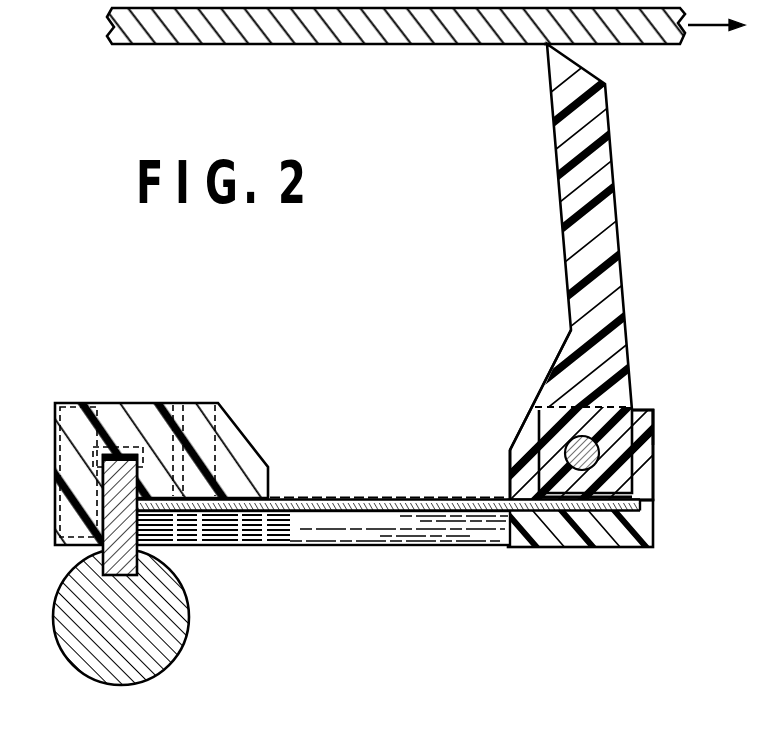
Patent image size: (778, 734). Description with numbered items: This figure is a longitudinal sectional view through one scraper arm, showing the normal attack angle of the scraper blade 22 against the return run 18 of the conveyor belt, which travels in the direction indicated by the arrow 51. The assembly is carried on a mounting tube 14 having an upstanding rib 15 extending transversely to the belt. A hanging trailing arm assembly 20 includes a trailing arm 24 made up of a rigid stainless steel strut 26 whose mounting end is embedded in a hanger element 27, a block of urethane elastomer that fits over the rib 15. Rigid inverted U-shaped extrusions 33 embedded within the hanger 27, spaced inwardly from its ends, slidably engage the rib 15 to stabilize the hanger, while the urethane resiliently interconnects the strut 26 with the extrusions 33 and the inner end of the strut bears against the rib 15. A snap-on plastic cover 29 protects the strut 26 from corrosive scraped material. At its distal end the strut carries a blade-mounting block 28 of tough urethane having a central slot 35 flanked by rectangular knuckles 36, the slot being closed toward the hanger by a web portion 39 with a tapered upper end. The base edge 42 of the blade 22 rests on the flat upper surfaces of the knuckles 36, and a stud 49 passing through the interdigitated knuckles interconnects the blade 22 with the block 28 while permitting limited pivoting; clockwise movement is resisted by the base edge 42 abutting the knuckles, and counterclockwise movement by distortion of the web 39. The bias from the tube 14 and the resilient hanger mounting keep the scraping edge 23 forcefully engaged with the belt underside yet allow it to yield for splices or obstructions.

The mounting tube 14 is at (173, 618).
The upstanding rib 15 is at (100, 549).
The return run of conveyor belt 18 is at (146, 28).
The trailing arm assembly 20 is at (378, 491).
The scraper blade 22 is at (605, 233).
The scraping edge 23 is at (545, 46).
The trailing arm 24 is at (427, 527).
The rigid strut 26 is at (203, 527).
The hanger element 27 is at (233, 428).
The blade-mounting block 28 is at (648, 516).
The snap-on plastic cover 29 is at (285, 496).
The inverted U-shaped extrusion 33 is at (58, 403).
The central slot 35 is at (645, 452).
The knuckle 36 is at (656, 425).
The web portion 39 is at (522, 440).
The base edge 42 is at (630, 388).
The stud 49 is at (588, 468).
The arrow 51 is at (707, 28).